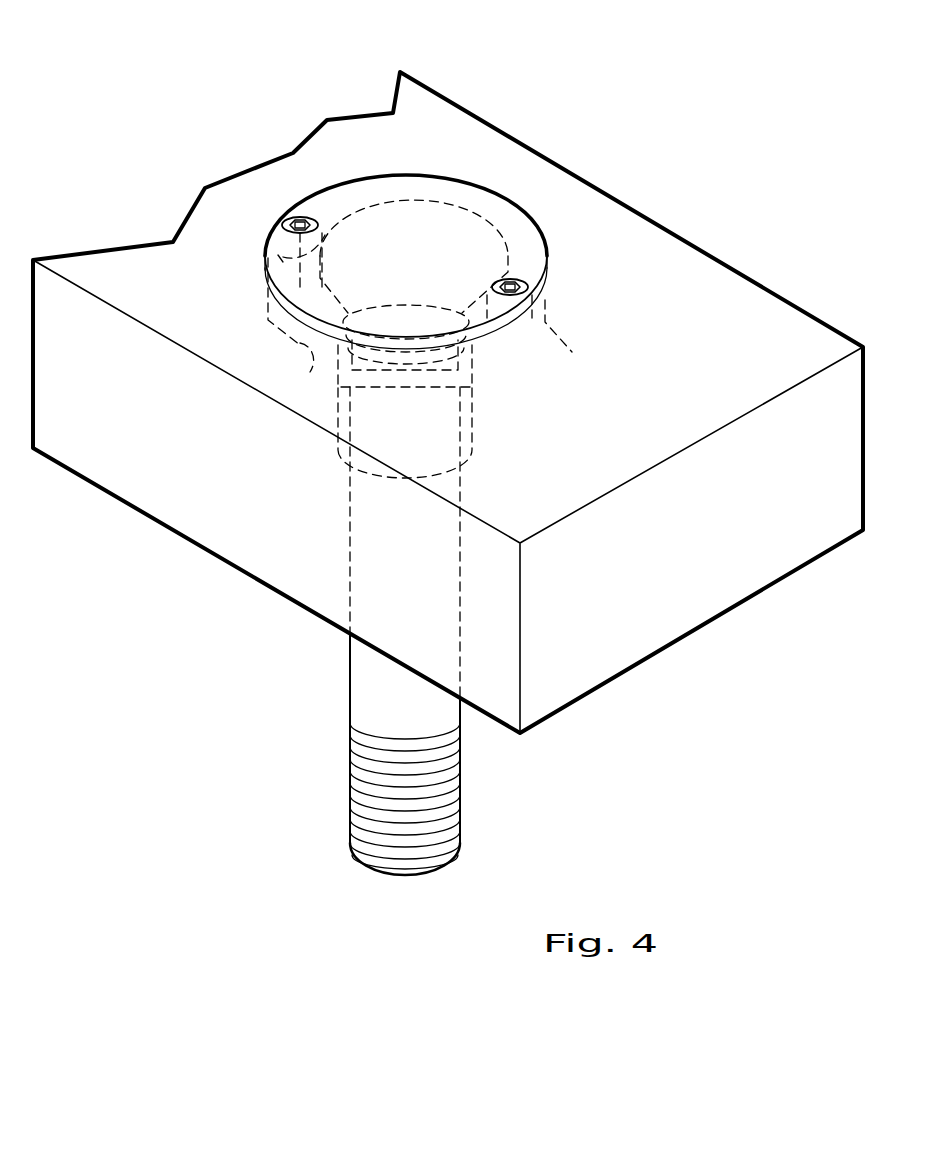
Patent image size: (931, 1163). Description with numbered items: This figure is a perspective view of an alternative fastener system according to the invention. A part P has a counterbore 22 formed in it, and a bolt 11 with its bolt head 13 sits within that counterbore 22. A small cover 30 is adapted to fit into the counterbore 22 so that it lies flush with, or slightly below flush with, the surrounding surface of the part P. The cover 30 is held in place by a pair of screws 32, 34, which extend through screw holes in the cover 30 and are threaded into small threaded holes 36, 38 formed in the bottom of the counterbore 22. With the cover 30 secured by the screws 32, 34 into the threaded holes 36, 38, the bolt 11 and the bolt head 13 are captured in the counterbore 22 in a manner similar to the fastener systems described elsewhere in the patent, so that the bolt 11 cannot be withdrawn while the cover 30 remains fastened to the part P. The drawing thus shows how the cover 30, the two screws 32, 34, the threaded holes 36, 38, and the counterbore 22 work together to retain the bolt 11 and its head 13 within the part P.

The part P is at (757, 317).
The bolt 11 is at (430, 587).
The bolt head 13 is at (428, 224).
The counterbore 22 is at (317, 360).
The cover 30 is at (505, 227).
The screw 32 is at (298, 213).
The screw 34 is at (517, 271).
The threaded hole 36 is at (278, 255).
The threaded hole 38 is at (543, 317).